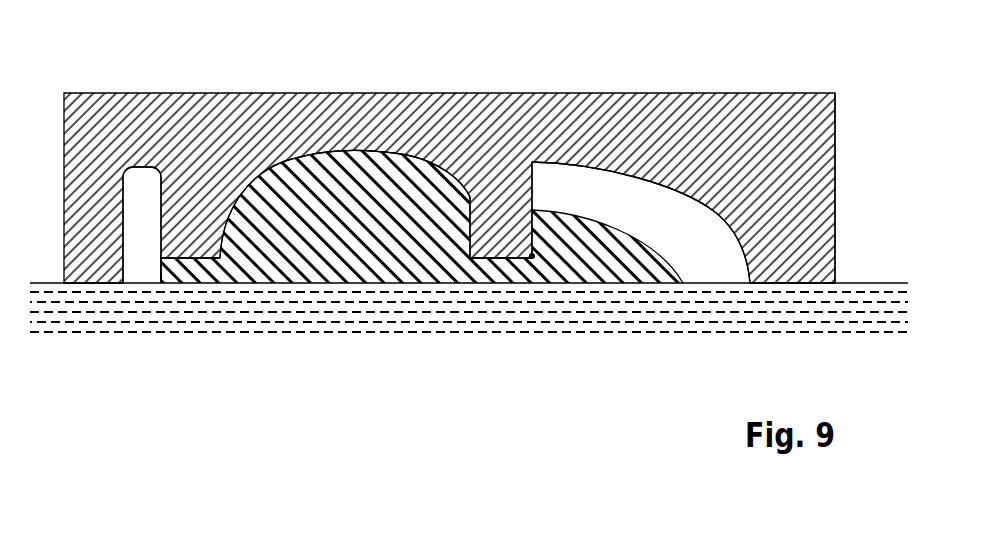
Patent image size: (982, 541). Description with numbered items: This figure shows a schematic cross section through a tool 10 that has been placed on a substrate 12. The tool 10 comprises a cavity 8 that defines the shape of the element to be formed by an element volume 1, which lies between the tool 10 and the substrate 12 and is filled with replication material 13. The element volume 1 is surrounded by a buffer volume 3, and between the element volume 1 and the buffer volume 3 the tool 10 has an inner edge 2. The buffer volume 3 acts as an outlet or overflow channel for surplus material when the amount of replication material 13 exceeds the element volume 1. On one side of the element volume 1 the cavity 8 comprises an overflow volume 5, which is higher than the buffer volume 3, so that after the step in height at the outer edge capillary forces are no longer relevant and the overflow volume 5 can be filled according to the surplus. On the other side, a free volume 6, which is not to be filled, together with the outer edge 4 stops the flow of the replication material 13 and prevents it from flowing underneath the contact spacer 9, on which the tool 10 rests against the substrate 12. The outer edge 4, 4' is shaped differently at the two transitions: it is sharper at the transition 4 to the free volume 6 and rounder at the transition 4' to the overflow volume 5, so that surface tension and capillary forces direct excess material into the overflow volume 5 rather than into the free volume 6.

The element volume 1 is at (307, 270).
The inner edge 2 is at (220, 257).
The buffer volume 3 is at (192, 268).
The outer edge 4 is at (162, 169).
The outer edge 4' is at (528, 156).
The overflow volume 5 is at (622, 187).
The free volume 6 is at (143, 268).
The cavity 8 is at (278, 113).
The contact spacer 9 is at (90, 273).
The tool 10 is at (822, 114).
The substrate 12 is at (387, 318).
The replication material 13 is at (350, 148).